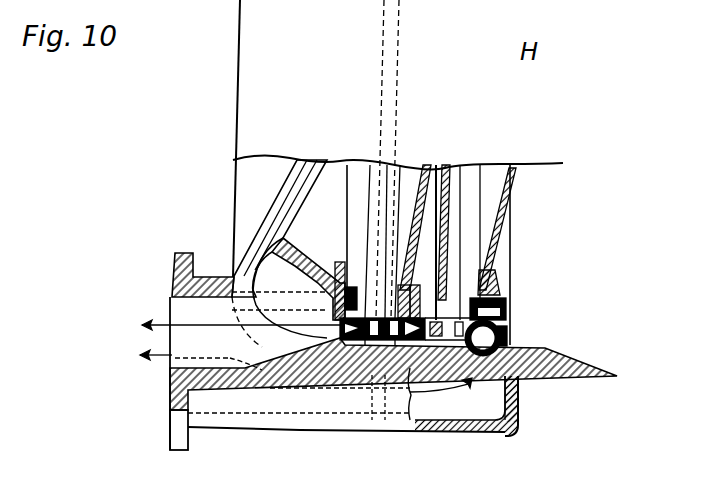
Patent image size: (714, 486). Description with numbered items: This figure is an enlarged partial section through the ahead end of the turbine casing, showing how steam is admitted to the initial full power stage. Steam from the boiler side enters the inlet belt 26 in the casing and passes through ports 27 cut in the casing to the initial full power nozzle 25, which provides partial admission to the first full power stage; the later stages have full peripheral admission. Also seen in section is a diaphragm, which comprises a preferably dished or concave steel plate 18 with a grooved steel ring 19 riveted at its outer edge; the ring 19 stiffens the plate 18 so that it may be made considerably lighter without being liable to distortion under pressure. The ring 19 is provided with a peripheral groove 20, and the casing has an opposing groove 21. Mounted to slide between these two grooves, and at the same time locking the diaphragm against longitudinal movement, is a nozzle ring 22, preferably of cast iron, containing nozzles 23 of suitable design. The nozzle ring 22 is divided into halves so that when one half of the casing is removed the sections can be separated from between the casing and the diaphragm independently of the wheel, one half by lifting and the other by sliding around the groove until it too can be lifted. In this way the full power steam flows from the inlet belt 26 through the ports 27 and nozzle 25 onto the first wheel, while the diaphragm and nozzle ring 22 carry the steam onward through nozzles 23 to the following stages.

The dished steel plate 18 is at (497, 221).
The grooved steel ring 19 is at (490, 281).
The peripheral groove 20 is at (506, 300).
The casing groove 21 is at (505, 343).
The nozzle ring 22 is at (393, 372).
The nozzles 23 is at (382, 370).
The initial full power nozzle 25 is at (503, 338).
The inlet belt 26 is at (485, 405).
The ports 27 is at (522, 386).